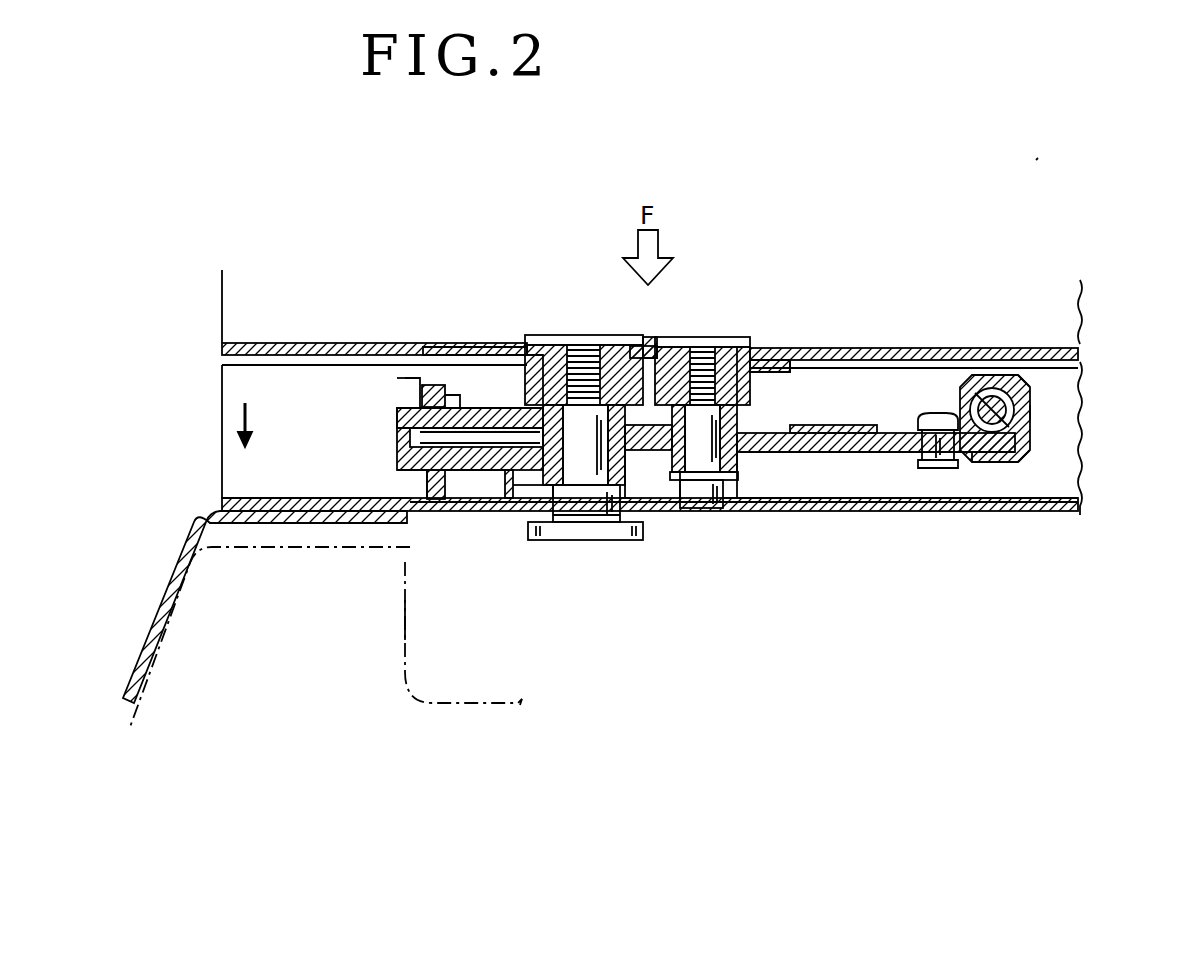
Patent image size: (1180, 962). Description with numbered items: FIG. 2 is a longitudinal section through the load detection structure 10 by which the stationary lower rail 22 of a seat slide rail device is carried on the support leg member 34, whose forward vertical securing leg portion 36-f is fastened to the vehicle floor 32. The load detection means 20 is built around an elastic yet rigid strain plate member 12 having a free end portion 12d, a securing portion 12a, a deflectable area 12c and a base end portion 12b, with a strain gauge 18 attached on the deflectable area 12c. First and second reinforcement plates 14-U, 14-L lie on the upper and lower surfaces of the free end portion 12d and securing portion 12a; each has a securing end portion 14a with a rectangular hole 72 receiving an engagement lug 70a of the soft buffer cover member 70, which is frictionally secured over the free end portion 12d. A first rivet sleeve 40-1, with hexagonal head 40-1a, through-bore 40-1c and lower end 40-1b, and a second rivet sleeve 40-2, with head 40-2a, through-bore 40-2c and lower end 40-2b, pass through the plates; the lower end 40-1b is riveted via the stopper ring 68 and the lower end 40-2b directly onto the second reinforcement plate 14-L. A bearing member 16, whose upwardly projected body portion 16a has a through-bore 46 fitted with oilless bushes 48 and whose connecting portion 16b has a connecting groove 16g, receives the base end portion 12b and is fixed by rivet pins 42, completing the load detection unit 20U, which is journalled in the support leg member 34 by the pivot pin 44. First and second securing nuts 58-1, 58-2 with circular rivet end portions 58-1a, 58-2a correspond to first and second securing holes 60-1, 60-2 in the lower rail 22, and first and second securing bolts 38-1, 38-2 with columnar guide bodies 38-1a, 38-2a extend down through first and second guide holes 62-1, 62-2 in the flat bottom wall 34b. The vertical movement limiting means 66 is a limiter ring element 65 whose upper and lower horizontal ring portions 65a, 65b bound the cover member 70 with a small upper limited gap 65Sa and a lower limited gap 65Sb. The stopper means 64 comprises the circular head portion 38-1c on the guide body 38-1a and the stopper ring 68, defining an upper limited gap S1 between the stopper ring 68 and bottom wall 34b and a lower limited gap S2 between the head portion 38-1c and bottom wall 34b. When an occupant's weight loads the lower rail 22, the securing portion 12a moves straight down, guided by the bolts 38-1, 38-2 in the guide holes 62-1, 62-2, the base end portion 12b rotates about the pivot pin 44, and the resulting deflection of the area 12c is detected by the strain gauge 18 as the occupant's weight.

The load detection structure 10 is at (1037, 160).
The lower rail 22 is at (1073, 322).
The load detection unit 20U is at (1062, 468).
The load detection means 20 is at (889, 468).
The support leg member 34 is at (1072, 514).
The flat bottom wall 34b is at (262, 497).
The forward vertical securing leg portion 36-f is at (182, 552).
The buffer cover member 70 is at (397, 440).
The free end portion 12d is at (410, 445).
The securing end portion 14a is at (398, 412).
The upper limited gap 65Sa is at (422, 395).
The lower limited gap 65Sb is at (430, 500).
The limiter ring element 65 is at (426, 390).
The upper horizontal ring portion 65a is at (402, 376).
The lower horizontal ring portion 65b is at (402, 512).
The vertical movement limiting means 66 is at (442, 396).
The rectangular hole 72 is at (428, 472).
The engagement lugs 70a is at (423, 347).
The first securing nut 58-1 is at (512, 347).
The circular rivet end portion 58-1a is at (620, 335).
The first securing hole 60-1 is at (630, 347).
The through-bore 40-1c is at (543, 345).
The non-circular head 40-1a is at (450, 347).
The first rivet sleeve 40-1 is at (548, 482).
The first securing bolt 38-1 is at (592, 542).
The columnar guide body 38-1a is at (612, 524).
The circular head portion 38-1c is at (640, 542).
The first guide hole 62-1 is at (587, 547).
The stopper means 64 is at (572, 558).
The stopper ring 68 is at (525, 500).
The upper limited gap S1 is at (540, 545).
The floor 32 is at (410, 650).
The securing portion 12a is at (655, 452).
The second securing nut 58-2 is at (690, 340).
The circular rivet end portion 58-2a is at (720, 340).
The through-bore 40-2c is at (740, 345).
The second securing hole 60-2 is at (766, 358).
The non-circular head 40-2a is at (808, 350).
The second rivet sleeve 40-2 is at (742, 470).
The second securing bolt 38-2 is at (716, 510).
The columnar guide body 38-2a is at (736, 482).
The second guide hole 62-2 is at (688, 510).
The lower limited gap S2 is at (725, 540).
The lower end 40-1b is at (632, 520).
The lower end 40-2b is at (745, 500).
The second reinforcement plate 14-L is at (748, 452).
The first reinforcement plate 14-U is at (778, 420).
The strain gauge 18 is at (908, 462).
The bearing member 16 is at (1038, 440).
The through-bore 46 is at (993, 400).
The rivet pins 42 is at (937, 412).
The oilless bushes 48 is at (1016, 403).
The pivot pin 44 is at (1033, 414).
The body portion 16a is at (1030, 382).
The connecting portion 16b is at (1005, 465).
The connecting groove 16g is at (1033, 466).
The strain plate member 12 is at (853, 455).
The base end portion 12b is at (960, 468).
The deflectable area 12c is at (890, 514).